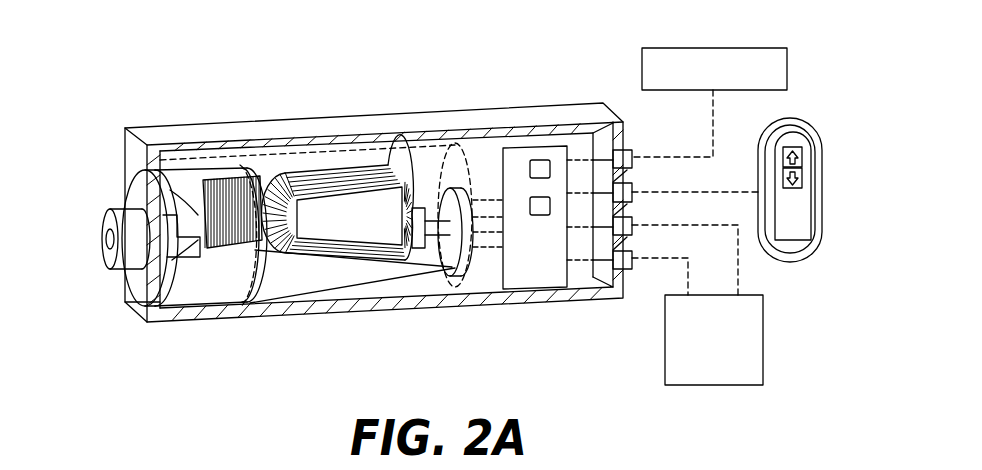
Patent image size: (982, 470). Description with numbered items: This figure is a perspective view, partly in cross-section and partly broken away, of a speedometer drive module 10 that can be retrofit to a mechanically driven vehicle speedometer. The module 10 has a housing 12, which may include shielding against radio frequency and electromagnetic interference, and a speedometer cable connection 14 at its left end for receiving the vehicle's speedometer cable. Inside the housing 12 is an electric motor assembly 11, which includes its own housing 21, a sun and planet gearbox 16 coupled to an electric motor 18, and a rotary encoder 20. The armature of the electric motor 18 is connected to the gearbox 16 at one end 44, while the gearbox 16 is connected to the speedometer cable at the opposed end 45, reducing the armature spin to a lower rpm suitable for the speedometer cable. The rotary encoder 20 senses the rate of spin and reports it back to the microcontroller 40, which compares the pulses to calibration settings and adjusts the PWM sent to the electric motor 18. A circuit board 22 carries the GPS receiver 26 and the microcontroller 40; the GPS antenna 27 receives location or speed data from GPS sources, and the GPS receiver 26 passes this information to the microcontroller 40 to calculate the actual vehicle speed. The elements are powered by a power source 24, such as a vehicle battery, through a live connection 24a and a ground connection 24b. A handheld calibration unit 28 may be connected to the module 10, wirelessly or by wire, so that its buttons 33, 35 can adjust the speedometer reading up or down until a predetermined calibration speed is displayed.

The speedometer drive module 10 is at (597, 82).
The electric motor assembly 11 is at (335, 178).
The housing 12 is at (184, 133).
The speedometer cable connection 14 is at (170, 200).
The gearbox 16 is at (255, 175).
The electric motor 18 is at (384, 168).
The rotary encoder 20 is at (457, 265).
The housing 21 is at (232, 290).
The circuit board 22 is at (515, 150).
The power source 24 is at (704, 387).
The live connection 24a is at (660, 276).
The ground connection 24b is at (685, 249).
The GPS receiver 26 is at (540, 162).
The GPS antenna 27 is at (785, 48).
The handheld calibration unit 28 is at (788, 262).
The button 33 is at (801, 147).
The button 35 is at (784, 177).
The microcontroller 40 is at (543, 215).
The end of armature 44 is at (318, 158).
The opposed end of gearbox 45 is at (194, 216).